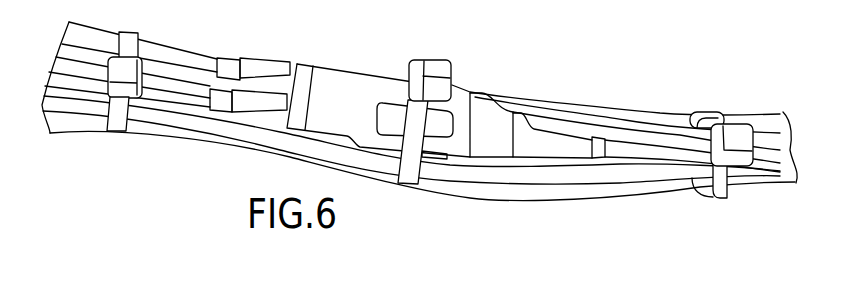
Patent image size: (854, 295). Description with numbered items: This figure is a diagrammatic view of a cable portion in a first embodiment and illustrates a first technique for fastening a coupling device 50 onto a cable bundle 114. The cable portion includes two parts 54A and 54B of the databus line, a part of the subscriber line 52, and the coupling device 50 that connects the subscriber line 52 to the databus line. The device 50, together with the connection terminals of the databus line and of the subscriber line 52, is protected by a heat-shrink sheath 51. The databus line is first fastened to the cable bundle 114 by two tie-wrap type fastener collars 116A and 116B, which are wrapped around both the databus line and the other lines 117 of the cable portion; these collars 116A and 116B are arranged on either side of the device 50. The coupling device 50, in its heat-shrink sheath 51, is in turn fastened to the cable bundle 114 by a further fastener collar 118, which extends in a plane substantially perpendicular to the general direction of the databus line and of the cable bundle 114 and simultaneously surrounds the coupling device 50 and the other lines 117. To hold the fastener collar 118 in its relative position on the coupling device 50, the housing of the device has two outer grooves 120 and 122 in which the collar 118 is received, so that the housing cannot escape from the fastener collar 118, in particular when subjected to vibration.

The coupling device 50 is at (340, 60).
The heat-shrink sheath 51 is at (368, 73).
The subscriber line 52 is at (183, 62).
The part of the databus line 54A is at (182, 96).
The part of the databus line 54B is at (650, 152).
The cable bundle 114 is at (595, 78).
The fastener collar 116A is at (116, 131).
The fastener collar 116B is at (705, 197).
The other lines 117 is at (595, 208).
The fastener collar 118 is at (404, 185).
The outer groove 120 is at (452, 80).
The outer groove 122 is at (442, 160).